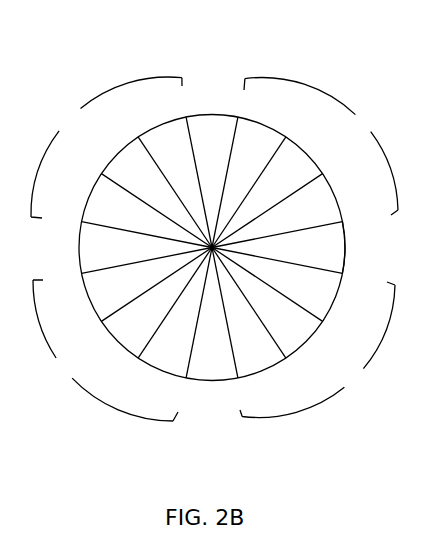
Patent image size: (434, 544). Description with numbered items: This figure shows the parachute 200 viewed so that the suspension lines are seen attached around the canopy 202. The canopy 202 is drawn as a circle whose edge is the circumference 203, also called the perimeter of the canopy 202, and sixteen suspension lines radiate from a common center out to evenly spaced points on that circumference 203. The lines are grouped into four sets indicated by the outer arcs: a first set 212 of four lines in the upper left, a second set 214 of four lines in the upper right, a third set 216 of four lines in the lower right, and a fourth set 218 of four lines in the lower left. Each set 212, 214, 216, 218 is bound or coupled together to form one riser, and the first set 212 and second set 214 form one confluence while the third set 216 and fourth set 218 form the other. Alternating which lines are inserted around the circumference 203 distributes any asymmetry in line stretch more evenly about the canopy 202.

The parachute 200 is at (145, 76).
The canopy 202 is at (213, 132).
The circumference 203 is at (349, 253).
The first set of suspension lines 212 is at (106, 147).
The second set of suspension lines 214 is at (321, 146).
The third set of suspension lines 216 is at (317, 350).
The fourth set of suspension lines 218 is at (105, 350).